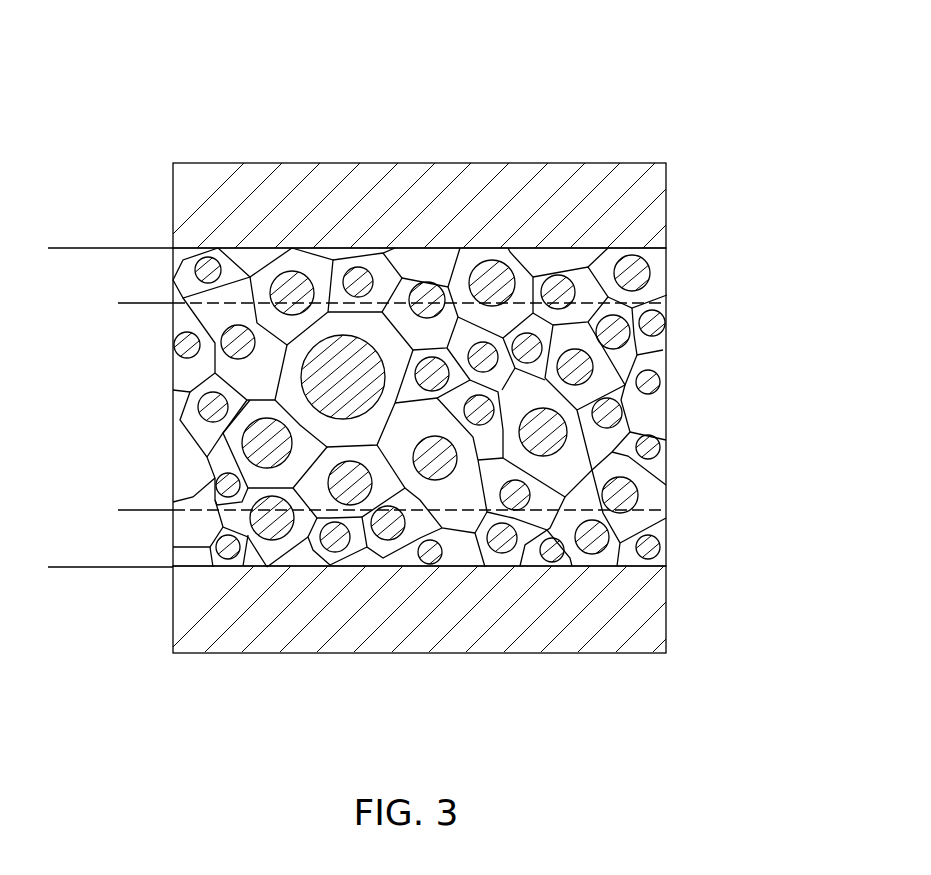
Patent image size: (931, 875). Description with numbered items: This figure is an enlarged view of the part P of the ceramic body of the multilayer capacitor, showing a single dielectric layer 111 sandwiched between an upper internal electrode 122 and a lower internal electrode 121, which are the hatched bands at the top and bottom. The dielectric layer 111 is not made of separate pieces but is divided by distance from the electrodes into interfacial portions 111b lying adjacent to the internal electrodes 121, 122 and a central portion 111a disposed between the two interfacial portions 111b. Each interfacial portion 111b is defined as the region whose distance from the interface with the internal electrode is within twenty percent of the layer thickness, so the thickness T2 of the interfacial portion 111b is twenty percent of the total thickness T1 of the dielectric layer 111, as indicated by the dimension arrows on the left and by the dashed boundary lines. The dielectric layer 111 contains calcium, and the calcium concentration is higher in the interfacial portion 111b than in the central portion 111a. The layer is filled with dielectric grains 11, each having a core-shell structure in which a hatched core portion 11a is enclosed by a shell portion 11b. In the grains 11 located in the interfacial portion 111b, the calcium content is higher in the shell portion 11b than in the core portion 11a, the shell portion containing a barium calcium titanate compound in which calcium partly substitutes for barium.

The dielectric grain 11 is at (465, 289).
The core portion 11a is at (353, 350).
The shell portion 11b is at (385, 338).
The dielectric layer 111 is at (465, 289).
The central portion 111a is at (465, 289).
The interfacial portion 111b is at (666, 275).
The internal electrode 121 is at (340, 628).
The internal electrode 122 is at (357, 187).
The thickness of the dielectric layer T1 is at (61, 248).
The thickness of the interfacial portion T2 is at (132, 248).
The part P is at (456, 750).